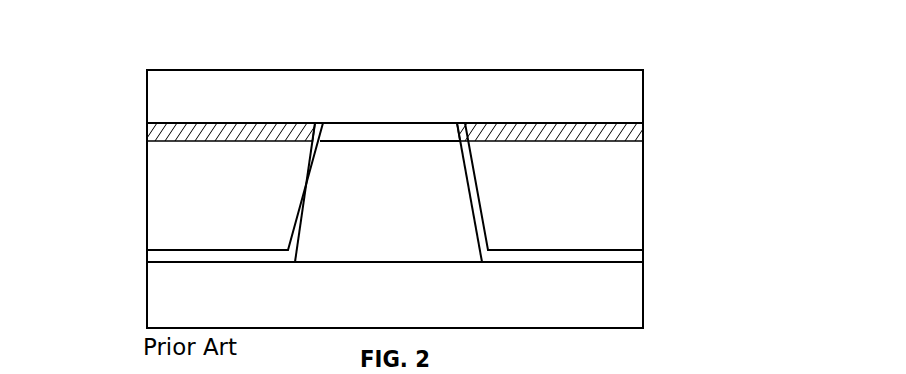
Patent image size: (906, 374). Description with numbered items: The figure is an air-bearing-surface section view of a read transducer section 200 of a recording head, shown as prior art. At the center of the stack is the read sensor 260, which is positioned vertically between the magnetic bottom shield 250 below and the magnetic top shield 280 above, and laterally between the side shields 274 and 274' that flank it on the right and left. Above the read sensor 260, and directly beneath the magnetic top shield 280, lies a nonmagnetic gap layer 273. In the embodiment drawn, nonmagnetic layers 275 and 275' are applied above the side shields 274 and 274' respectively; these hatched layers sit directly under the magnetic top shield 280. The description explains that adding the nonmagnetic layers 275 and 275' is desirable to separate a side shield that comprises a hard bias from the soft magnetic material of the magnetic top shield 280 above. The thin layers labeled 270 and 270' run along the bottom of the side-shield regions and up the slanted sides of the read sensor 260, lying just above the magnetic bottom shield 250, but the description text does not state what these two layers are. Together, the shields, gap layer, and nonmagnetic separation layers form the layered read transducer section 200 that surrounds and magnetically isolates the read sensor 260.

The read transducer section 200 is at (633, 52).
The magnetic top shield 280 is at (440, 98).
The nonmagnetic layer 275 is at (589, 141).
The nonmagnetic layer 275' is at (201, 140).
The side shield 274 is at (595, 192).
The side shield 274' is at (190, 192).
The nonmagnetic gap layer 273 is at (526, 169).
The bottom layer 270 is at (440, 192).
The bottom layer 270' is at (194, 196).
The read sensor 260 is at (515, 222).
The magnetic bottom shield 250 is at (643, 313).